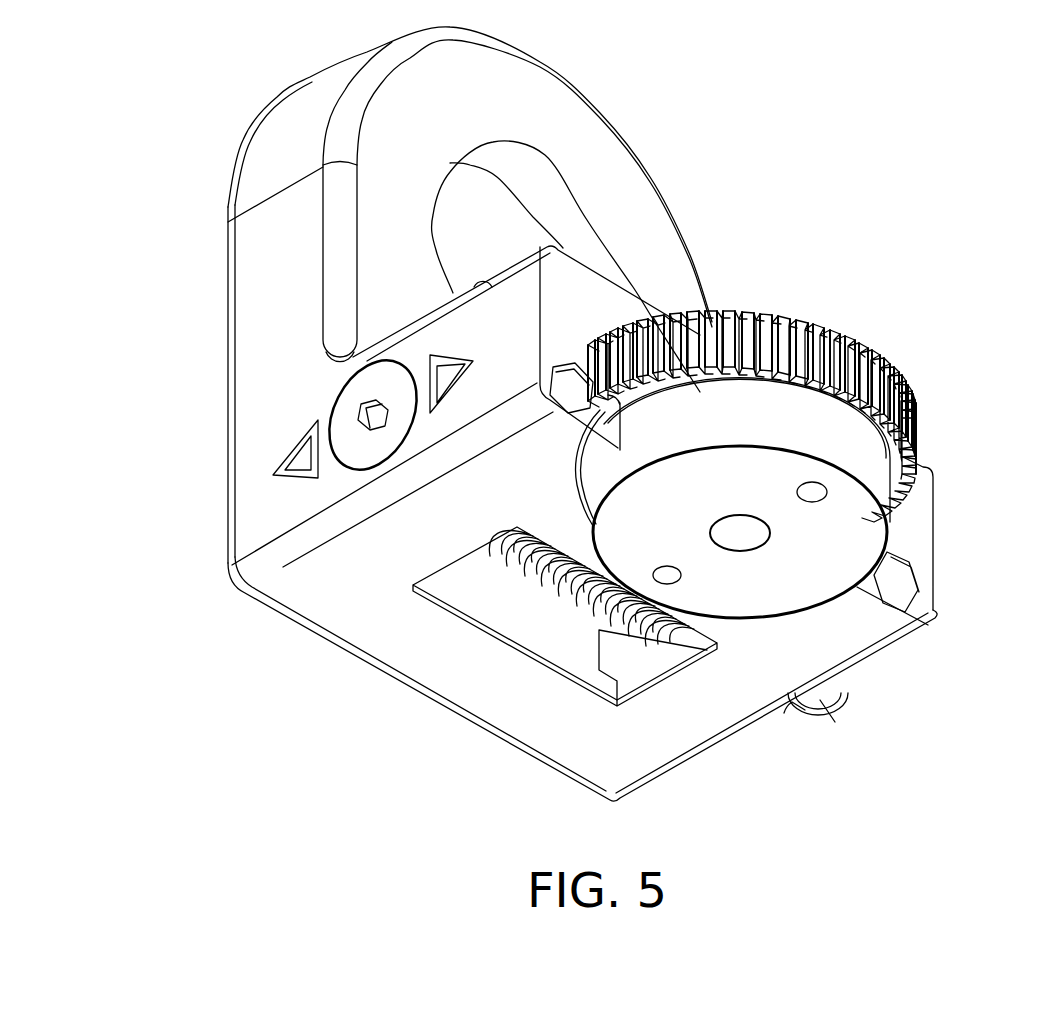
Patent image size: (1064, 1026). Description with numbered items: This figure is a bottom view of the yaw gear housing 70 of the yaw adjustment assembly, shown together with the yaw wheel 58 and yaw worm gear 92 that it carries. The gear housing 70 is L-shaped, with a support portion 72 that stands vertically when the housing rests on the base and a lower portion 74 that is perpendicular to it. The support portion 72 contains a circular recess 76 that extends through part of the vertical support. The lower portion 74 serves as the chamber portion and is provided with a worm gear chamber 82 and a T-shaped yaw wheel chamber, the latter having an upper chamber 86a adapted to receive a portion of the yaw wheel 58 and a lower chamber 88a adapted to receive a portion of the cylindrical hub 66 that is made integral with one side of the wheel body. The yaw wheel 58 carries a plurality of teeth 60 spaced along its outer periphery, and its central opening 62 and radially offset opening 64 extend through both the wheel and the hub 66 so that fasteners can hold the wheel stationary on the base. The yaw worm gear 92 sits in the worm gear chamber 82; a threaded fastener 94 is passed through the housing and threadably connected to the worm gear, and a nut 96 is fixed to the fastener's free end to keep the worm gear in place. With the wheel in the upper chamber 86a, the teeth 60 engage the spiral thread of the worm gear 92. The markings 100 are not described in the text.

The yaw wheel 58 is at (815, 425).
The teeth 60 is at (858, 330).
The central opening 62 is at (752, 533).
The opening 64 is at (812, 492).
The cylindrical hub 66 is at (860, 452).
The yaw gear housing 70 is at (647, 125).
The support portion 72 is at (623, 187).
The lower portion 74 is at (253, 525).
The circular recess 76 is at (492, 157).
The worm gear chamber 82 is at (505, 613).
The upper chamber 86a is at (625, 327).
The lower chamber 88a is at (578, 478).
The yaw worm gear 92 is at (582, 597).
The fastener 94 is at (355, 455).
The nut 96 is at (803, 703).
The indicator markings 100 is at (293, 453).